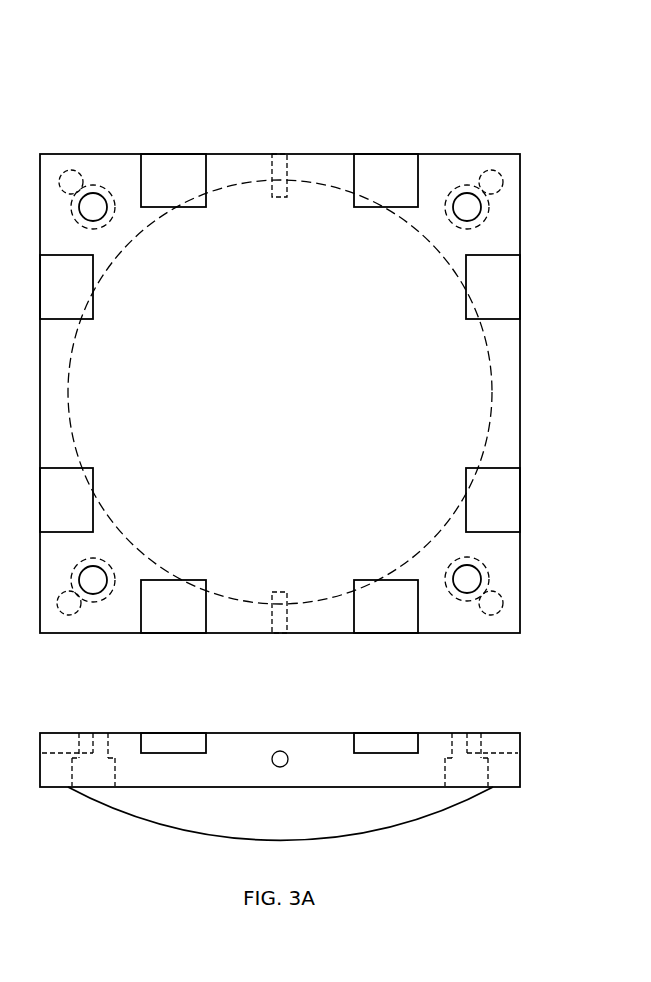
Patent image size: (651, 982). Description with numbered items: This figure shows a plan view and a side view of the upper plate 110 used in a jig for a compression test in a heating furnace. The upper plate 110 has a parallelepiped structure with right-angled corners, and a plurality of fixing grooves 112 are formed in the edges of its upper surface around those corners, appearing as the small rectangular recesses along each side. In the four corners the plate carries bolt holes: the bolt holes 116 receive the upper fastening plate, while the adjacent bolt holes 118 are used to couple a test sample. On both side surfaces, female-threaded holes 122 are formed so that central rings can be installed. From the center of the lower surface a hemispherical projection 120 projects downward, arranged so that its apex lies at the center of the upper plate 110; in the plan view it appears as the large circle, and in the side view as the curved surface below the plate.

The upper plate 110 is at (558, 117).
The fixing grooves 112 is at (176, 165).
The bolt holes 116 is at (98, 198).
The bolt holes 118 is at (63, 173).
The hemispherical projection 120 is at (493, 385).
The female-threaded holes 122 is at (278, 150).